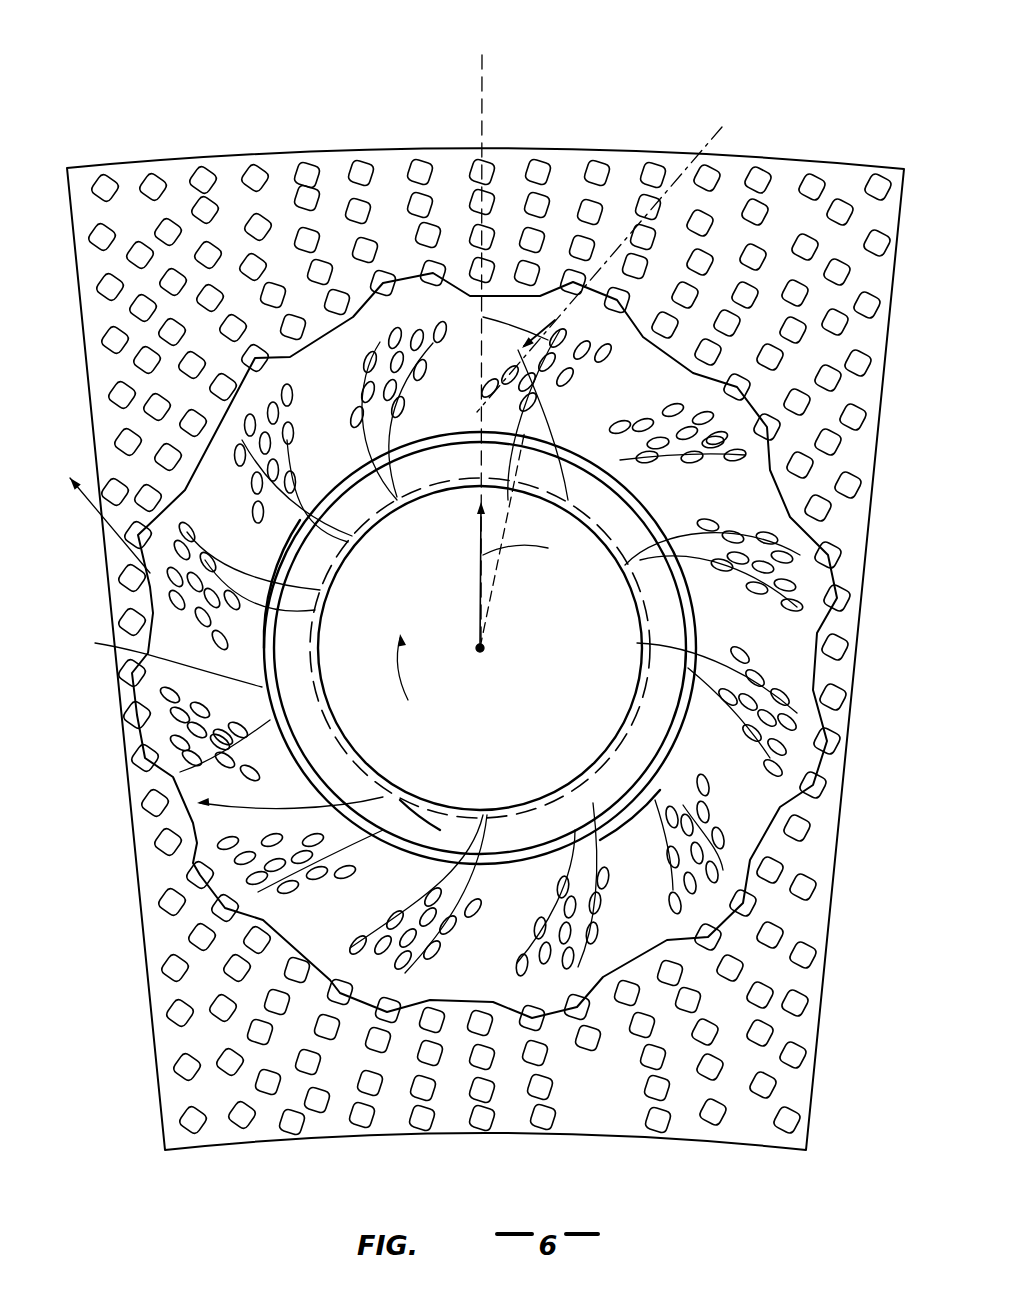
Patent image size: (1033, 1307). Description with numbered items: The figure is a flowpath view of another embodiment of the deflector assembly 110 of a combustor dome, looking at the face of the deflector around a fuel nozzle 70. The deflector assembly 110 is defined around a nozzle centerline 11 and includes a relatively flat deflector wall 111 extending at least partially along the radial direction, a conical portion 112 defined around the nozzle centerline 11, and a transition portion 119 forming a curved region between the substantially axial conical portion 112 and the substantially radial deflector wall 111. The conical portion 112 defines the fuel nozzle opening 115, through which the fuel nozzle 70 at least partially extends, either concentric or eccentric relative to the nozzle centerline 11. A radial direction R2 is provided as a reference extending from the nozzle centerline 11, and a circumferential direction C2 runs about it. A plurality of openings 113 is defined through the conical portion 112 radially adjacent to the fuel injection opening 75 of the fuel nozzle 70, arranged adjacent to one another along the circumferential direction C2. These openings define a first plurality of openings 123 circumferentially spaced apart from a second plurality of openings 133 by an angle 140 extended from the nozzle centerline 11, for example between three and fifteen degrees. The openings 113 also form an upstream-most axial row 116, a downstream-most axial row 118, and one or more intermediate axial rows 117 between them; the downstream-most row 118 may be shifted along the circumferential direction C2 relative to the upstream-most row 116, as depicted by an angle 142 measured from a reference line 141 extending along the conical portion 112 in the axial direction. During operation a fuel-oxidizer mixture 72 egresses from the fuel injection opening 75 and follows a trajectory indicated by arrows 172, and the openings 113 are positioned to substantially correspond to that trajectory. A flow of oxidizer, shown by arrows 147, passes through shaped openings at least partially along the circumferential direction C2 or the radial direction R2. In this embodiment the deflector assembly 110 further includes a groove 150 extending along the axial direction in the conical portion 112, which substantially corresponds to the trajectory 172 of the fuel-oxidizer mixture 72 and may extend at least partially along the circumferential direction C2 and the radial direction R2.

The deflector assembly 110 is at (100, 745).
The deflector wall 111 is at (830, 424).
The fuel nozzle opening 115 is at (627, 517).
The first plurality of openings 123 is at (623, 328).
The transition portion 119 is at (208, 858).
The fuel nozzle 70 is at (596, 752).
The fuel-oxidizer mixture 72 is at (455, 844).
The fuel injection opening 75 is at (340, 565).
The conical portion 112 is at (418, 798).
The nozzle centerline 11 is at (478, 653).
The radial direction R2 is at (479, 566).
The circumferential direction C2 is at (371, 673).
The reference line 141 is at (482, 70).
The angle 140 is at (548, 560).
The angle 142 is at (503, 318).
The flow of oxidizer 147 is at (83, 498).
The downstream-most axial row 118 is at (378, 328).
The upstream-most axial row 116 is at (411, 430).
The intermediate axial rows 117 is at (431, 386).
The plurality of openings 113 is at (300, 437).
The trajectory 172 is at (282, 533).
The second plurality of openings 133 is at (653, 407).
The groove 150 is at (705, 553).